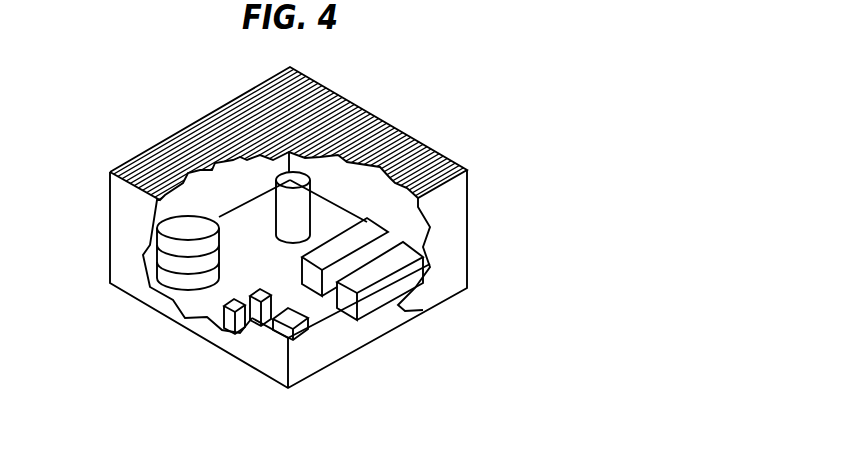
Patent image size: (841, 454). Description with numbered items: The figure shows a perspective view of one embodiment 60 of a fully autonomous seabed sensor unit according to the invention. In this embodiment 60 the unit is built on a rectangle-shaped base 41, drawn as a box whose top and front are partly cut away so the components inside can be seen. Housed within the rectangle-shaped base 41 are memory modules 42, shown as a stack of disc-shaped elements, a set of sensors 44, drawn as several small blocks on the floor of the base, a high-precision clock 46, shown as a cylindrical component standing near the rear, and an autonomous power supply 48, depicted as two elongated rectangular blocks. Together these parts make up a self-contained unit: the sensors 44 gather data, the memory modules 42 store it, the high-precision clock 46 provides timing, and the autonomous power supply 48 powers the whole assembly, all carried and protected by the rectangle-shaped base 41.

The sensor unit embodiment 60 is at (291, 194).
The rectangle-shaped base 41 is at (198, 120).
The memory modules 42 is at (168, 284).
The sensors 44 is at (285, 338).
The high-precision clock 46 is at (297, 212).
The autonomous power supply 48 is at (348, 300).